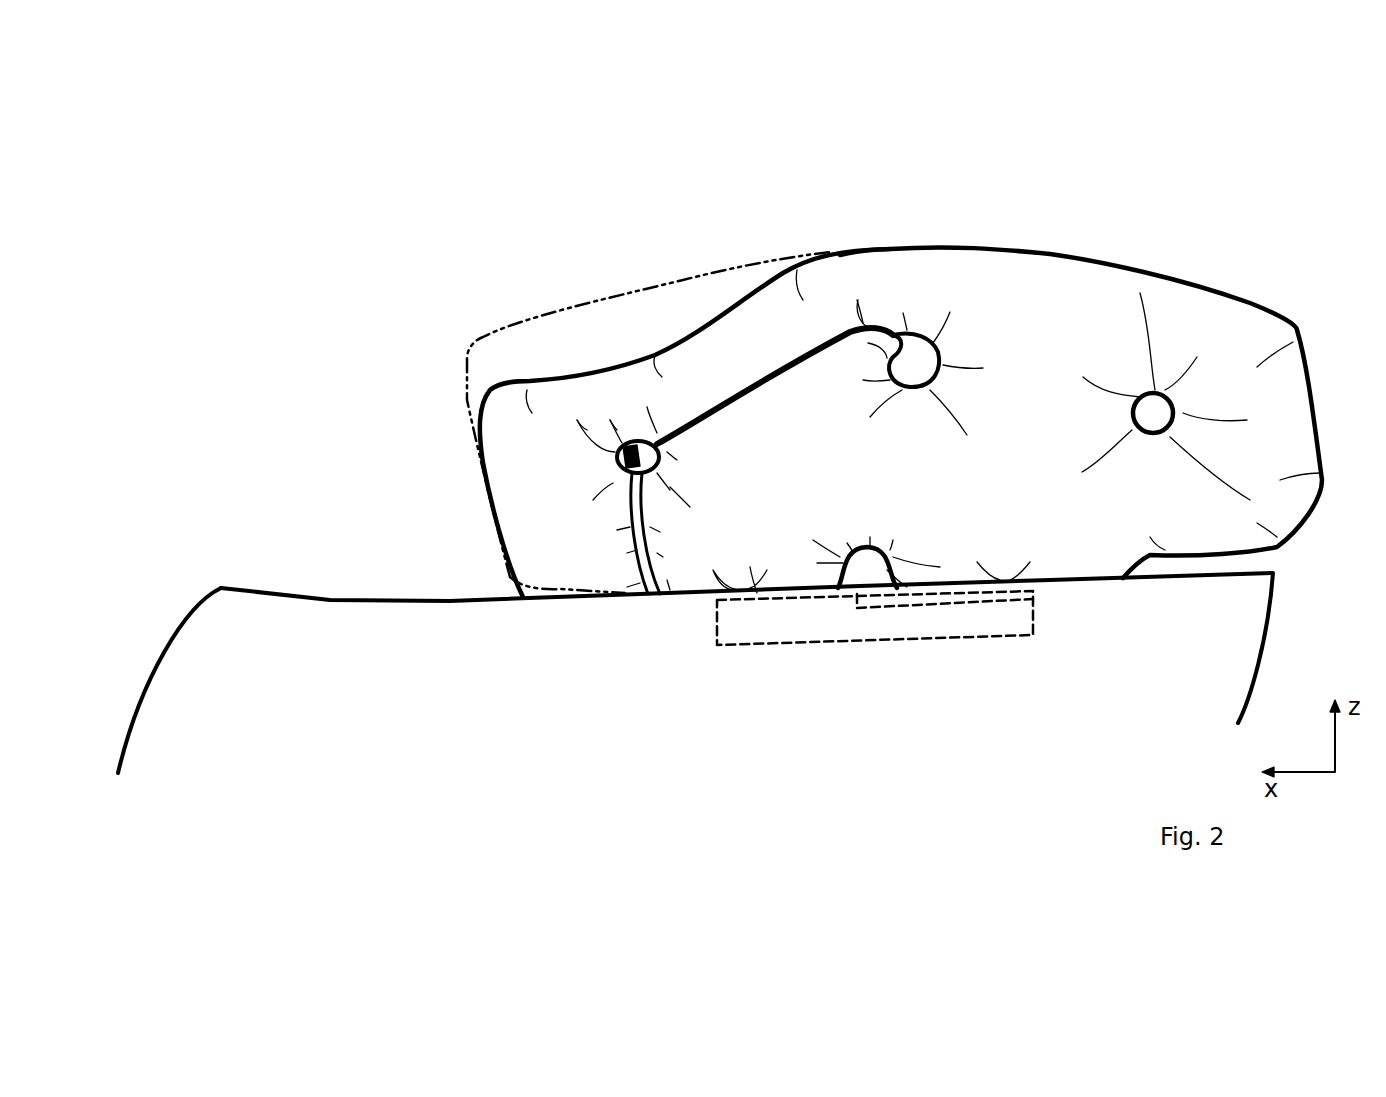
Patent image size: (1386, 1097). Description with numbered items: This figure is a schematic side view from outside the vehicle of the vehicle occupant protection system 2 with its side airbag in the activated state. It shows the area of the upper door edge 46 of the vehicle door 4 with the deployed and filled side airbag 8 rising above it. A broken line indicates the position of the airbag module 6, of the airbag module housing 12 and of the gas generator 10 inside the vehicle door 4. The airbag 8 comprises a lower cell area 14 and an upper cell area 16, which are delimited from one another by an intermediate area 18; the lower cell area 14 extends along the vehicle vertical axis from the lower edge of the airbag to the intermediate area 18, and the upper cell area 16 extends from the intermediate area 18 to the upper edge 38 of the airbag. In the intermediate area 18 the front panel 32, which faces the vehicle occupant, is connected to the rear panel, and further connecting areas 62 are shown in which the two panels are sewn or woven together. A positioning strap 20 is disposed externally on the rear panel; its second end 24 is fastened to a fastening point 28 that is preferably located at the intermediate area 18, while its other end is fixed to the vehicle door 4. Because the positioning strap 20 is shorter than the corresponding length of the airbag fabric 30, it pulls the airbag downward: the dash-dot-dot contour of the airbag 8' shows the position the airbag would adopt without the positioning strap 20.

The vehicle occupant protection system 2 is at (374, 299).
The vehicle door 4 is at (238, 648).
The upper door edge 46 is at (332, 600).
The side airbag 8 is at (901, 379).
The airbag without positioning strap 8' is at (648, 410).
The upper edge of the airbag 38 is at (892, 250).
The airbag fabric 30 is at (1058, 315).
The front panel 32 is at (941, 380).
The upper cell area 16 is at (735, 345).
The intermediate area 18 is at (638, 452).
The second end of the positioning strap 24 is at (625, 450).
The fastening point 28 is at (622, 455).
The positioning strap 20 is at (630, 497).
The lower cell area 14 is at (772, 483).
The connecting areas 62 is at (1153, 413).
The airbag module 6 is at (920, 642).
The airbag module housing 12 is at (955, 640).
The gas generator 10 is at (985, 600).